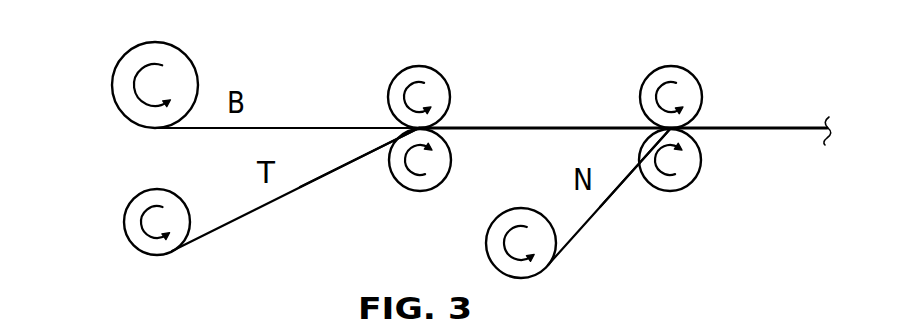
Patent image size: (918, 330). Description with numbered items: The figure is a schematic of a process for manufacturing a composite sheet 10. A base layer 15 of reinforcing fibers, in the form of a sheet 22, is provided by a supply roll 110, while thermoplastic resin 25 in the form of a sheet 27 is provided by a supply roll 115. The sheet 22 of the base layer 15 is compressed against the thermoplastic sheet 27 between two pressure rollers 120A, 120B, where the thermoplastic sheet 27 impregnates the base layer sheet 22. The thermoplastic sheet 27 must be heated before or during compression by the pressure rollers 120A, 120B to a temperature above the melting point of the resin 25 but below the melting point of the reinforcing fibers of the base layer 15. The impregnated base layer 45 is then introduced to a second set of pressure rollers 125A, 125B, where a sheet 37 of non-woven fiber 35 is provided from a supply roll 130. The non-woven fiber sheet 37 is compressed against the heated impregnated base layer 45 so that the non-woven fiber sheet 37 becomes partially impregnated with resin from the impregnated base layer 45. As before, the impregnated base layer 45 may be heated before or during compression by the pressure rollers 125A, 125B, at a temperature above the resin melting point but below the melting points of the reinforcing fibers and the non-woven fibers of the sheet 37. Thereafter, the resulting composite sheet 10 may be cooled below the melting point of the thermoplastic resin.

The composite sheet 10 is at (788, 127).
The base layer 15 is at (293, 128).
The sheet 22 is at (348, 128).
The thermoplastic resin 25 is at (233, 221).
The sheet 27 is at (305, 186).
The non-woven fiber 35 is at (565, 246).
The sheet 37 is at (602, 204).
The impregnated base layer 45 is at (572, 128).
The supply roll 110 is at (117, 65).
The supply roll 115 is at (123, 226).
The pressure roller 120A is at (438, 72).
The pressure roller 120B is at (420, 192).
The pressure roller 125A is at (692, 73).
The pressure roller 125B is at (694, 181).
The supply roll 130 is at (522, 208).